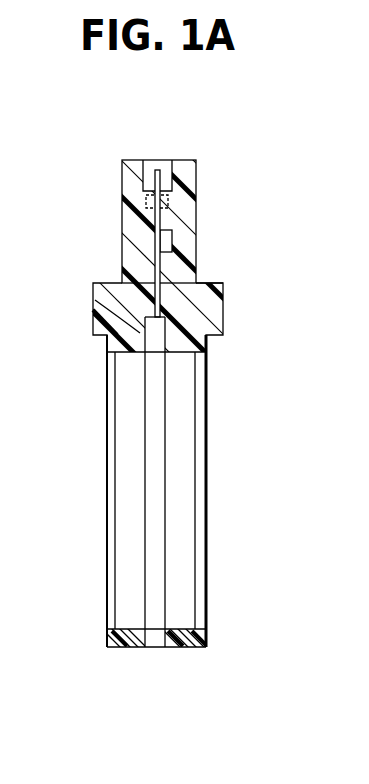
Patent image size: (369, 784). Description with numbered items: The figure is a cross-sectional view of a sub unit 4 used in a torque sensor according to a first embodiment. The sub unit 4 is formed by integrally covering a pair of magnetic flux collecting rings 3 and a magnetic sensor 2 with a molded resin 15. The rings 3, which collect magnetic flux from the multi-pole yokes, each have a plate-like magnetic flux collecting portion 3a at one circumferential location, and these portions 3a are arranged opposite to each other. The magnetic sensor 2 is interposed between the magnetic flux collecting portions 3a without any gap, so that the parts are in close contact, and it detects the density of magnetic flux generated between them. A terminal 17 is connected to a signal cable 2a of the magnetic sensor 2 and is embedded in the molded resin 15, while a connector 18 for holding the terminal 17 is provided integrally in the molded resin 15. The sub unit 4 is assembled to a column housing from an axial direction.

The magnetic sensor 2 is at (217, 333).
The signal cable 2a is at (121, 272).
The magnetic flux collecting rings 3 is at (176, 648).
The magnetic flux collecting portions 3a is at (93, 318).
The sub unit 4 is at (218, 178).
The molded resin 15 is at (206, 284).
The terminal 17 is at (160, 160).
The connector 18 is at (143, 190).